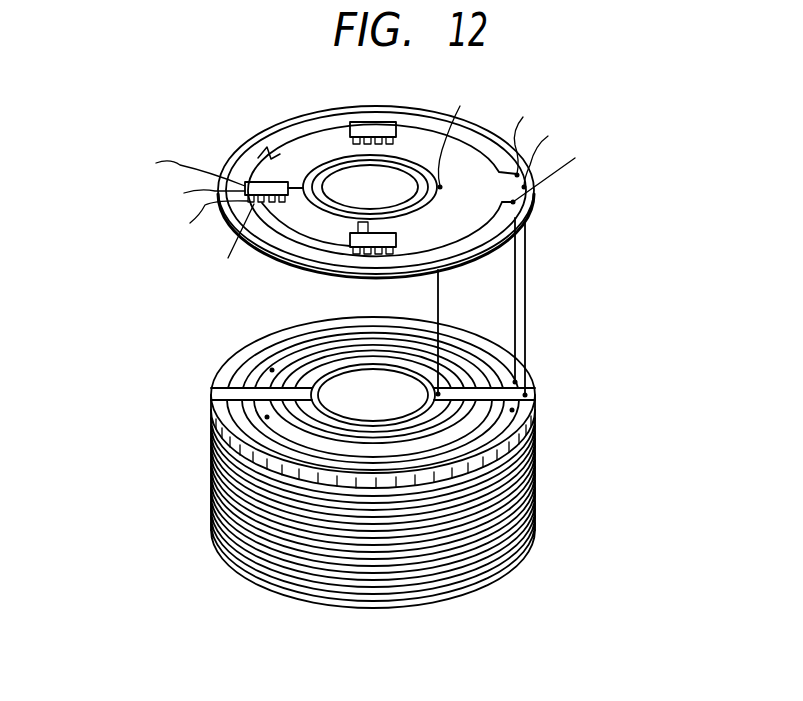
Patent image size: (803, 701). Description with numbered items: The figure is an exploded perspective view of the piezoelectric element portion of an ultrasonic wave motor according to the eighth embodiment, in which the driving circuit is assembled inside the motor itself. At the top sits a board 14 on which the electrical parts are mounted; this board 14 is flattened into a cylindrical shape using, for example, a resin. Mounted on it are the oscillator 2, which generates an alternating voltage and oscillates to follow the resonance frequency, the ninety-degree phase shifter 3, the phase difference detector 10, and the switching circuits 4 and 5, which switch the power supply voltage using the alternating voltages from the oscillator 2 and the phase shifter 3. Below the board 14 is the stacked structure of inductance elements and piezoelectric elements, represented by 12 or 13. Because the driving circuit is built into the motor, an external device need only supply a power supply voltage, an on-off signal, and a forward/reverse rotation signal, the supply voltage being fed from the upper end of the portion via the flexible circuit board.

The oscillator 2 is at (225, 152).
The phase shifter 3 is at (225, 152).
The phase difference detector 10 is at (262, 181).
The switching circuit 4 is at (371, 236).
The switching circuit 5 is at (362, 128).
The stacked structure of inductance elements and piezoelectric elements 12 is at (467, 462).
The stacked structure of inductance elements and piezoelectric elements 13 is at (632, 326).
The board 14 is at (388, 233).